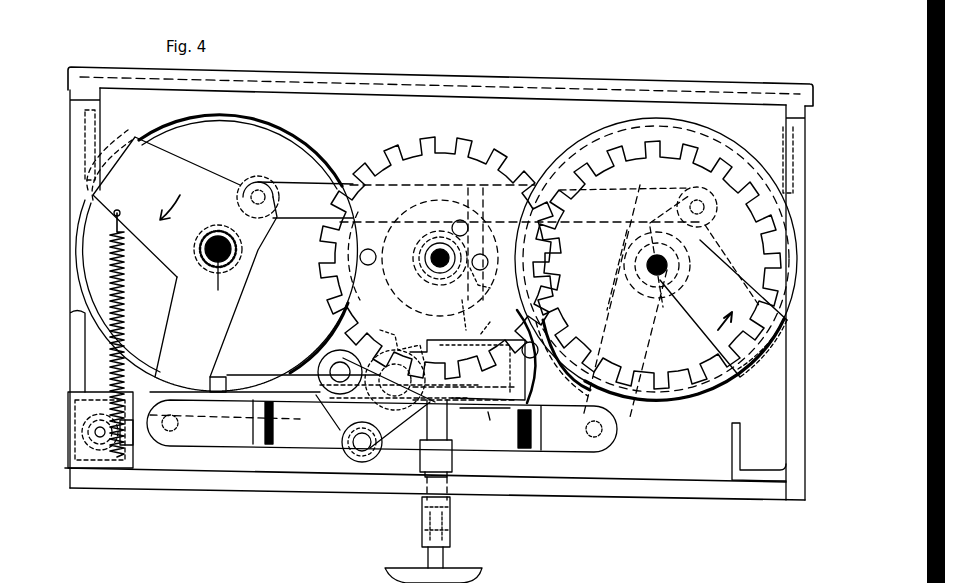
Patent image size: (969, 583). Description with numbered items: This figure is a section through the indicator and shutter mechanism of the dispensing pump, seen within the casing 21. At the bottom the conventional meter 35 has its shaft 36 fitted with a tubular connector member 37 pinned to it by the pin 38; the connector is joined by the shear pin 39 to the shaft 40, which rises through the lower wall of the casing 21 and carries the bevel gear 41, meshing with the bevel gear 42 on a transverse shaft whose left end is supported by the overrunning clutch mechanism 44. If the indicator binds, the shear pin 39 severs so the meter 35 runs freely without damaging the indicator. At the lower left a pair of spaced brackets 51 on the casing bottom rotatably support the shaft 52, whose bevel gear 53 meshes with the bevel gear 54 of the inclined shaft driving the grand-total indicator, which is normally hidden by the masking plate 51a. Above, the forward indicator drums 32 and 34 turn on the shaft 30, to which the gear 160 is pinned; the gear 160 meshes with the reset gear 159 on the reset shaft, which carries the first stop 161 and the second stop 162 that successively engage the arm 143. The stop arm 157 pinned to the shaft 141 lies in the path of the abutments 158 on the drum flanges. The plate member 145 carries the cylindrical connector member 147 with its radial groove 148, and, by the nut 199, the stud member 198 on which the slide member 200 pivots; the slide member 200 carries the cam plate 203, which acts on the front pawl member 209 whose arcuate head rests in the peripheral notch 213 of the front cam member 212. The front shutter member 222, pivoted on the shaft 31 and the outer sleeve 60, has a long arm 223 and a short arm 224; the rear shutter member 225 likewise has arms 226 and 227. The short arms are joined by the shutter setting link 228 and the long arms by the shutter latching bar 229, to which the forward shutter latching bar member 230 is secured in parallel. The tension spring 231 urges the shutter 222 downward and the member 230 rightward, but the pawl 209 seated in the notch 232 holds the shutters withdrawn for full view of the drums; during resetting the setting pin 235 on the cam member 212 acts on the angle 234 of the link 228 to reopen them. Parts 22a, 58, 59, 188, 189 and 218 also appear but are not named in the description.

The casing 21 is at (692, 486).
The top rail 22a is at (568, 78).
The shaft 30 is at (667, 270).
The shaft 31 is at (215, 286).
The indicator drum 32 is at (318, 152).
The indicator drum 34 is at (765, 150).
The meter 35 is at (458, 570).
The shaft 36 is at (428, 555).
The tubular connector member 37 is at (422, 522).
The pin 38 is at (450, 531).
The shear pin 39 is at (450, 508).
The shaft 40 is at (422, 500).
The bevel gear 41 is at (449, 450).
The bevel gear 42 is at (475, 417).
The overrunning clutch mechanism 44 is at (472, 410).
The brackets 51 is at (93, 390).
The masking plate 51a is at (70, 455).
The shaft 52 is at (108, 460).
The bevel gear 53 is at (88, 475).
The bevel gear 54 is at (140, 455).
The hub 58 is at (205, 252).
The bearing 59 is at (208, 240).
The outer sleeve 60 is at (220, 230).
The shaft 141 is at (345, 352).
The arm 143 is at (466, 342).
The plate member 145 is at (325, 418).
The connector member 147 is at (320, 378).
The groove 148 is at (330, 345).
The stop arm 157 is at (253, 380).
The abutments 158 is at (225, 372).
The reset gear 159 is at (475, 152).
The gear 160 is at (605, 152).
The first stop 161 is at (451, 228).
The second stop 162 is at (376, 242).
The knob 188 is at (532, 358).
The curved lever 189 is at (553, 395).
The stud member 198 is at (365, 468).
The nut 199 is at (345, 458).
The slide member 200 is at (372, 455).
The cam plate 203 is at (385, 330).
The front pawl member 209 is at (485, 322).
The front cam member 212 is at (405, 303).
The peripheral notch 213 is at (488, 248).
The pawl 218 is at (496, 277).
The front shutter member 222 is at (170, 170).
The arm 223 is at (248, 318).
The arm 224 is at (240, 186).
The rear shutter member 225 is at (742, 378).
The arm 226 is at (620, 405).
The arm 227 is at (705, 237).
The shutter setting link 228 is at (317, 205).
The shutter latching bar 229 is at (213, 440).
The forward shutter latching bar member 230 is at (522, 450).
The tension spring 231 is at (124, 300).
The notch 232 is at (512, 450).
The angle 234 is at (478, 186).
The setting pin 235 is at (452, 290).